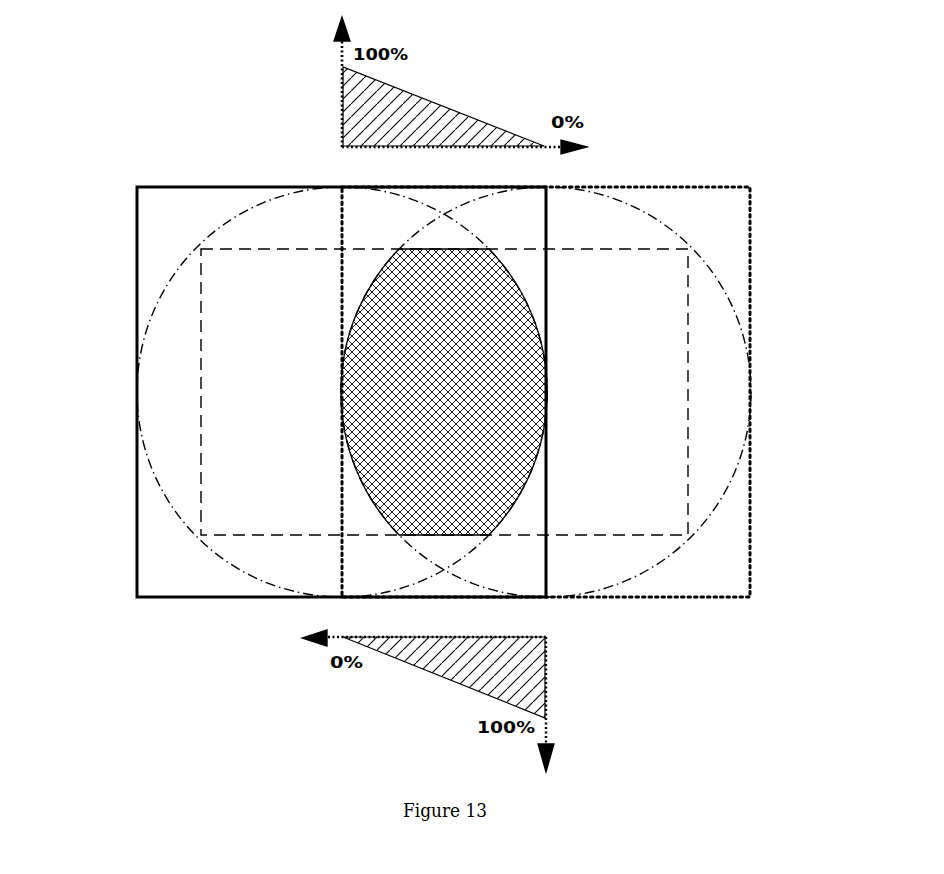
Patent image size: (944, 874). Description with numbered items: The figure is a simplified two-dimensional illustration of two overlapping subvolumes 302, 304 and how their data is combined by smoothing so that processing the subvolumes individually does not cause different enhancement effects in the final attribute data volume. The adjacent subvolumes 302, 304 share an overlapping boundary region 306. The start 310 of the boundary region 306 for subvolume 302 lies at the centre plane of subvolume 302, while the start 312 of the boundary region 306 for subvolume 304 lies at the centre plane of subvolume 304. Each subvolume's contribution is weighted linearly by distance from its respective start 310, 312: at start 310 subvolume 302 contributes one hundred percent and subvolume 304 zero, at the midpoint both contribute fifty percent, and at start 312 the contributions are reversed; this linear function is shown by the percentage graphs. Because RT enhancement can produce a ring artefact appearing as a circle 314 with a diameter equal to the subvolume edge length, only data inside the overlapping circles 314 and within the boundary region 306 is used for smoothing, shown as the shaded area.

The subvolume 302 is at (148, 210).
The subvolume 304 is at (741, 240).
The overlapping boundary region 306 is at (543, 603).
The start of the boundary region for subvolume 302 310 is at (340, 232).
The start of the boundary region for subvolume 304 312 is at (547, 221).
The ring artefact circle 314 is at (201, 536).